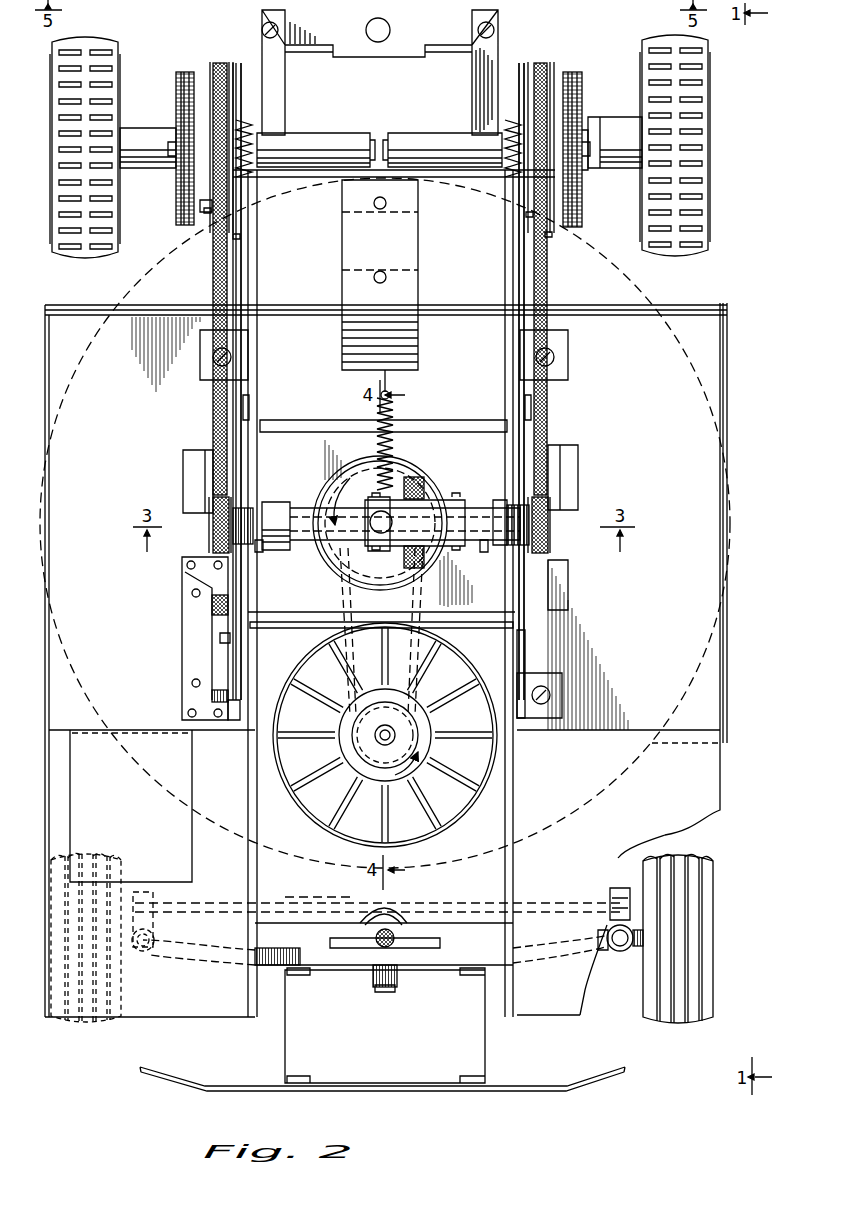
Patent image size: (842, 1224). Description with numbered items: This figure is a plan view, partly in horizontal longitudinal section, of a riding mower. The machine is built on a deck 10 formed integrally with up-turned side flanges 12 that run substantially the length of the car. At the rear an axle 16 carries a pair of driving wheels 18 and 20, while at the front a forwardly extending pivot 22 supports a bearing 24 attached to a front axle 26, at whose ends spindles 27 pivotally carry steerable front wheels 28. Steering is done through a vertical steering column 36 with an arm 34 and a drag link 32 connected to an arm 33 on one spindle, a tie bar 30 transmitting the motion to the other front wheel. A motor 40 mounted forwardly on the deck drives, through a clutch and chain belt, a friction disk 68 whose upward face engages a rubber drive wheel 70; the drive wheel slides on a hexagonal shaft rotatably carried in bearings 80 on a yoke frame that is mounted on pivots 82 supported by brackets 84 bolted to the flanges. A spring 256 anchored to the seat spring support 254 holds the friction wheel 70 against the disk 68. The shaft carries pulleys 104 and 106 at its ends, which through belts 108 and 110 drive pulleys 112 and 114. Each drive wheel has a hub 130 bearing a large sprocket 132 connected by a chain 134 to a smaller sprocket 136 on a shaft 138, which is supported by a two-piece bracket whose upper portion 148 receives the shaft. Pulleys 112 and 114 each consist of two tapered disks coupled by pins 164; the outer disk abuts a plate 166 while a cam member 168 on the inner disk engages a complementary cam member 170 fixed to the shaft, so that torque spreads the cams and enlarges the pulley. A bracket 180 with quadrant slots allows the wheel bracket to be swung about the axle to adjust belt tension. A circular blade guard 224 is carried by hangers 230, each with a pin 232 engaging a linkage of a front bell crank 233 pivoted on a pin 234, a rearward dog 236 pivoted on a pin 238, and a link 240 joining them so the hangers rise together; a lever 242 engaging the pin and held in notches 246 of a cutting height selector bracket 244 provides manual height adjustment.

The deck 10 is at (490, 268).
The side flanges 12 is at (508, 360).
The axle 16 is at (542, 118).
The driving wheel 18 is at (112, 38).
The driving wheel 20 is at (700, 80).
The pivot 22 is at (397, 987).
The bearing 24 is at (380, 977).
The front axle 26 is at (210, 968).
The spindle 27 is at (625, 952).
The front wheel 28 is at (75, 1022).
The tie bar 30 is at (620, 895).
The drag link 32 is at (470, 915).
The arm 33 is at (612, 895).
The arm 34 is at (375, 918).
The steering column 36 is at (395, 943).
The motor 40 is at (470, 762).
The friction disk 68 is at (332, 483).
The drive wheel 70 is at (398, 548).
The bearings 80 is at (450, 545).
The pivots 82 is at (481, 552).
The brackets 84 is at (262, 580).
The pulley 104 is at (204, 546).
The pulley 106 is at (562, 548).
The belt 108 is at (222, 398).
The belt 110 is at (540, 398).
The pulley 112 is at (206, 55).
The pulley 114 is at (546, 52).
The hub 130 is at (605, 133).
The sprocket 132 is at (583, 80).
The chain 134 is at (580, 205).
The sprocket 136 is at (585, 170).
The shaft 138 is at (582, 190).
The upper portion of bracket 148 is at (320, 132).
The pins 164 is at (530, 215).
The plate 166 is at (213, 206).
The cam member 168 is at (238, 118).
The cam member 170 is at (250, 130).
The bracket 180 is at (472, 72).
The blade guard 224 is at (727, 640).
The hanger 230 is at (555, 697).
The pin 232 is at (365, 540).
The bell crank 233 is at (525, 660).
The pin 234 is at (302, 628).
The dog 236 is at (548, 410).
The pin 238 is at (305, 422).
The link 240 is at (540, 480).
The lever 242 is at (212, 604).
The cutting height selector bracket 244 is at (212, 695).
The notches 246 is at (222, 640).
The spring support 254 is at (415, 297).
The spring 256 is at (400, 440).